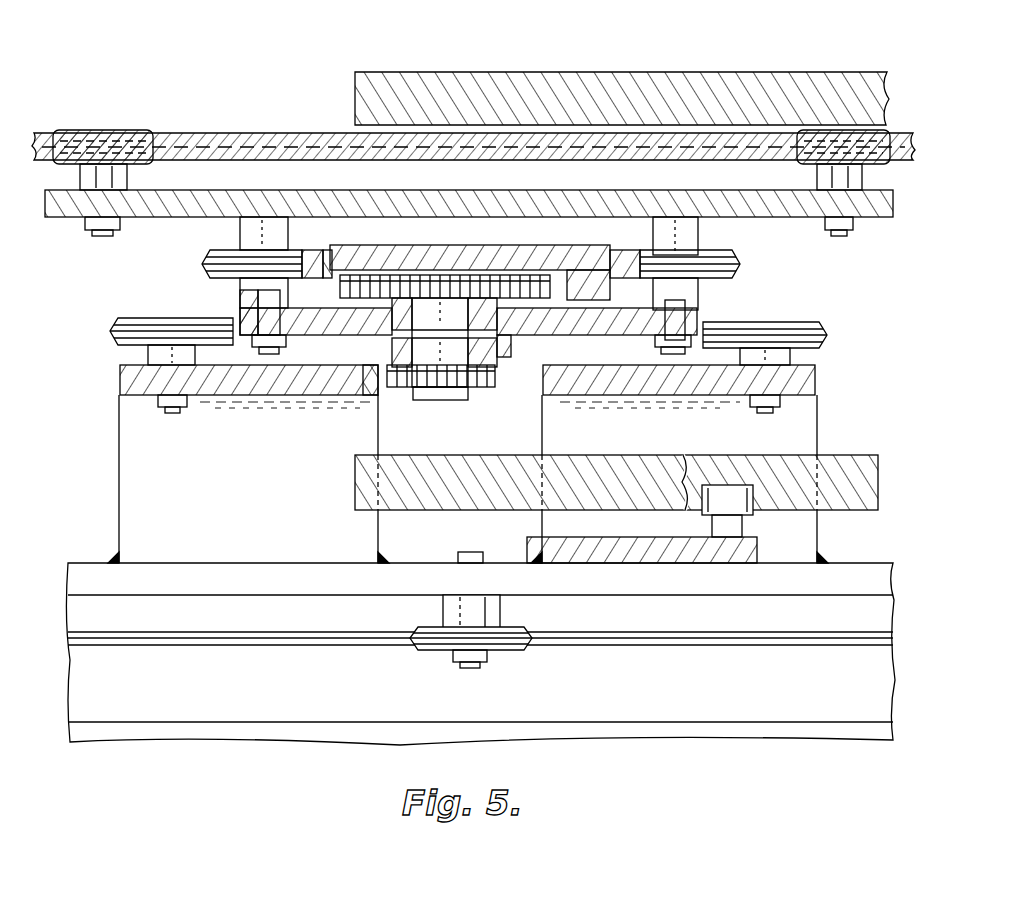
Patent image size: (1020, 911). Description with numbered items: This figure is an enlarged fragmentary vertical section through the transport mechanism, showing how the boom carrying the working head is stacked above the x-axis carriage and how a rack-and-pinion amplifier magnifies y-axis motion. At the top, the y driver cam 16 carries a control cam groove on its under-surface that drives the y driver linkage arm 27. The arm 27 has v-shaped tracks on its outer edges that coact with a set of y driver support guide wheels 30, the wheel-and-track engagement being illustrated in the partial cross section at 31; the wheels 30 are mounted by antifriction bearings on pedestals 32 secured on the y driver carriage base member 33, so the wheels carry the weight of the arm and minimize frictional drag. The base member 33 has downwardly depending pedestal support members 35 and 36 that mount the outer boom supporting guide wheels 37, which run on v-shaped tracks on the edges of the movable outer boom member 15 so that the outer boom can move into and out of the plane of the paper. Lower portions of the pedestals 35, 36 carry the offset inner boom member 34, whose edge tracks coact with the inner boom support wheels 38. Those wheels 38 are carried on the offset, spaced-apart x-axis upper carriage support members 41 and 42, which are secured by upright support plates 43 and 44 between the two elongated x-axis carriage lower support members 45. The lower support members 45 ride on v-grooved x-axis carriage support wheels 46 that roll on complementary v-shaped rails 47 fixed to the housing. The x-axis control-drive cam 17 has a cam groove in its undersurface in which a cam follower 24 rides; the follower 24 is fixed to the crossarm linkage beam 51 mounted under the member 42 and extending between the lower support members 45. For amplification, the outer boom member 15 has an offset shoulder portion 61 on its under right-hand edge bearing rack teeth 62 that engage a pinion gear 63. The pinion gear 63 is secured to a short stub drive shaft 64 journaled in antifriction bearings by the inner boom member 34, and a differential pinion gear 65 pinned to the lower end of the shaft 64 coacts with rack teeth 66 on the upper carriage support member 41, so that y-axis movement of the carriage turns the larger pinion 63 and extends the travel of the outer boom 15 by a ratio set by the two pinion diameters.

The outer boom member 15 is at (524, 245).
The y driver cam 16 is at (402, 74).
The x-axis control-drive cam 17 is at (836, 511).
The cam follower 24 is at (755, 516).
The y driver linkage arm 27 is at (215, 133).
The y driver support guide wheels 30 is at (86, 130).
The partial cross section of v-shaped track and wheel 31 is at (327, 264).
The pedestals 32 is at (80, 176).
The y driver carriage base member 33 is at (237, 194).
The inner boom member 34 is at (296, 322).
The pedestal support member 35 is at (240, 236).
The pedestal support member 36 is at (698, 233).
The outer boom supporting guide wheels 37 is at (202, 256).
The inner boom support wheels 38 is at (110, 327).
The x-axis upper carriage support member 41 is at (120, 377).
The x-axis upper carriage support member 42 is at (815, 383).
The upright support plate 43 is at (119, 476).
The upright support plate 44 is at (817, 420).
The x-axis carriage lower support members 45 is at (88, 575).
The x-axis carriage support wheels 46 is at (515, 649).
The v-shaped rails 47 is at (650, 646).
The crossarm linkage beam 51 is at (533, 547).
The offset shoulder portion 61 is at (610, 290).
The rack teeth 62 is at (553, 298).
The pinion gear 63 is at (340, 285).
The stub drive shaft 64 is at (440, 390).
The differential pinion gear 65 is at (490, 386).
The rack teeth 66 is at (372, 392).